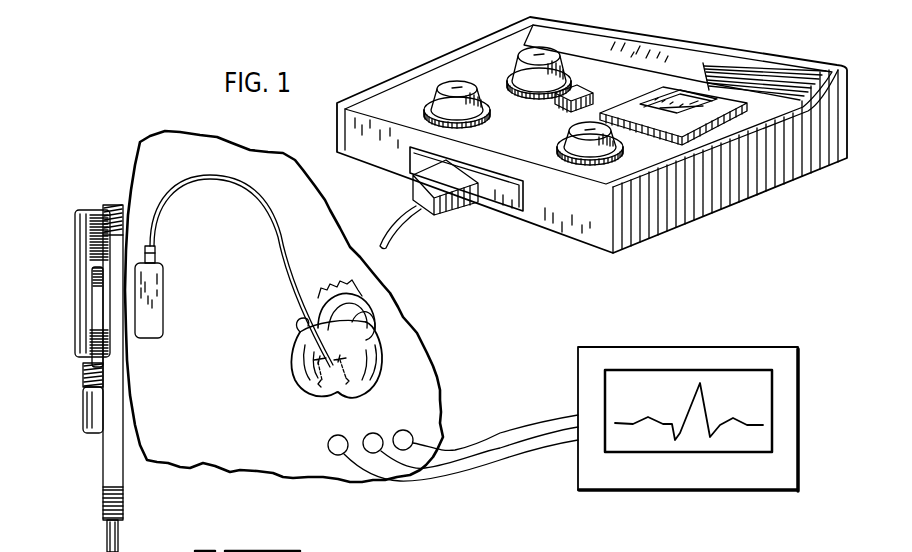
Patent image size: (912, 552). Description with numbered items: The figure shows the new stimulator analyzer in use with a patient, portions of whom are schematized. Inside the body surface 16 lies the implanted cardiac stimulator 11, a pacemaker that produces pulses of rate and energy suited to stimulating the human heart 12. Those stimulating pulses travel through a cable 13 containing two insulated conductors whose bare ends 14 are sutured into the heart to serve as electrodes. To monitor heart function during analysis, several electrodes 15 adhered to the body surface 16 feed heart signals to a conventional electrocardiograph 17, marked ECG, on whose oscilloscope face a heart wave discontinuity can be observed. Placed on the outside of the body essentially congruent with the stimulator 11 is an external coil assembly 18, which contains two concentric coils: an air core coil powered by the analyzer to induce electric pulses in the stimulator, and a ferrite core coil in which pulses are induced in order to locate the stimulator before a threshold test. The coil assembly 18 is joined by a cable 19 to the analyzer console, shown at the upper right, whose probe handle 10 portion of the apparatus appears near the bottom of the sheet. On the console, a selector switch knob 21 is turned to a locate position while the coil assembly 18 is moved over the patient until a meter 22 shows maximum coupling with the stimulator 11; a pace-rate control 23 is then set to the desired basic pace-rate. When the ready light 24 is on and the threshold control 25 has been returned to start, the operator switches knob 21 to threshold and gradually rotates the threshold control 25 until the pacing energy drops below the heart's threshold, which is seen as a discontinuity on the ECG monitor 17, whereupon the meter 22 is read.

The probe handle 10 is at (105, 548).
The implanted cardiac stimulator 11 is at (164, 300).
The human heart 12 is at (378, 350).
The cable 13 is at (233, 179).
The bare ends 14 is at (300, 362).
The electrodes 15 is at (425, 435).
The body surface 16 is at (437, 388).
The electrocardiograph 17 is at (578, 410).
The external coil assembly 18 is at (76, 264).
The cable 19 is at (389, 240).
The selector switch knob 21 is at (508, 66).
The meter 22 is at (672, 137).
The pace-rate control 23 is at (430, 75).
The ready light 24 is at (556, 107).
The threshold control 25 is at (557, 146).